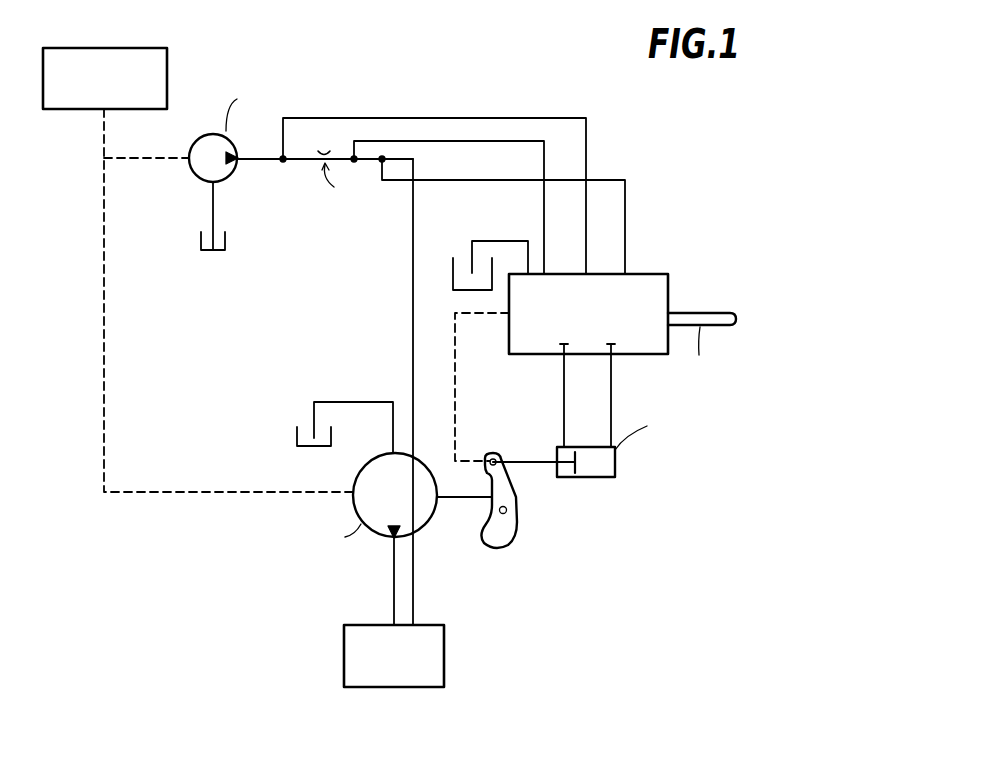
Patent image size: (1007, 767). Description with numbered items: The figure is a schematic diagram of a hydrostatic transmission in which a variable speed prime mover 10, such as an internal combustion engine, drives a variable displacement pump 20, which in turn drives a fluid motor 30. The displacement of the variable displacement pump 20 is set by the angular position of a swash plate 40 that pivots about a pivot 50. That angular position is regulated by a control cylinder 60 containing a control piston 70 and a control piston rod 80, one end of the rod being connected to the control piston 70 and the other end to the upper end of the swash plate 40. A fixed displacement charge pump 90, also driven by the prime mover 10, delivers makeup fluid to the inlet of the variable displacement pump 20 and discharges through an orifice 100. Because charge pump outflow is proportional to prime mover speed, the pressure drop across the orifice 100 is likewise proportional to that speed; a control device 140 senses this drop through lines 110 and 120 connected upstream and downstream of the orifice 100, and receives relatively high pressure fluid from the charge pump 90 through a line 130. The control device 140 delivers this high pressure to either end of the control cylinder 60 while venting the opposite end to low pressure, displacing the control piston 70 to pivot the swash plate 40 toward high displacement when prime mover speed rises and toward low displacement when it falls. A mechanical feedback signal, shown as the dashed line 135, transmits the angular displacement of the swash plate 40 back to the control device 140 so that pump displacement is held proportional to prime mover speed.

The variable speed prime mover 10 is at (167, 80).
The variable displacement pump 20 is at (360, 478).
The fluid motor 30 is at (444, 662).
The swash plate 40 is at (517, 500).
The pivot 50 is at (506, 513).
The control cylinder 60 is at (615, 470).
The control piston 70 is at (578, 470).
The control piston rod 80 is at (548, 456).
The charge pump 90 is at (188, 172).
The orifice 100 is at (344, 175).
The line 110 is at (431, 118).
The line 120 is at (492, 141).
The line 130 is at (612, 180).
The mechanical feedback signal 135 is at (455, 388).
The control device 140 is at (656, 274).